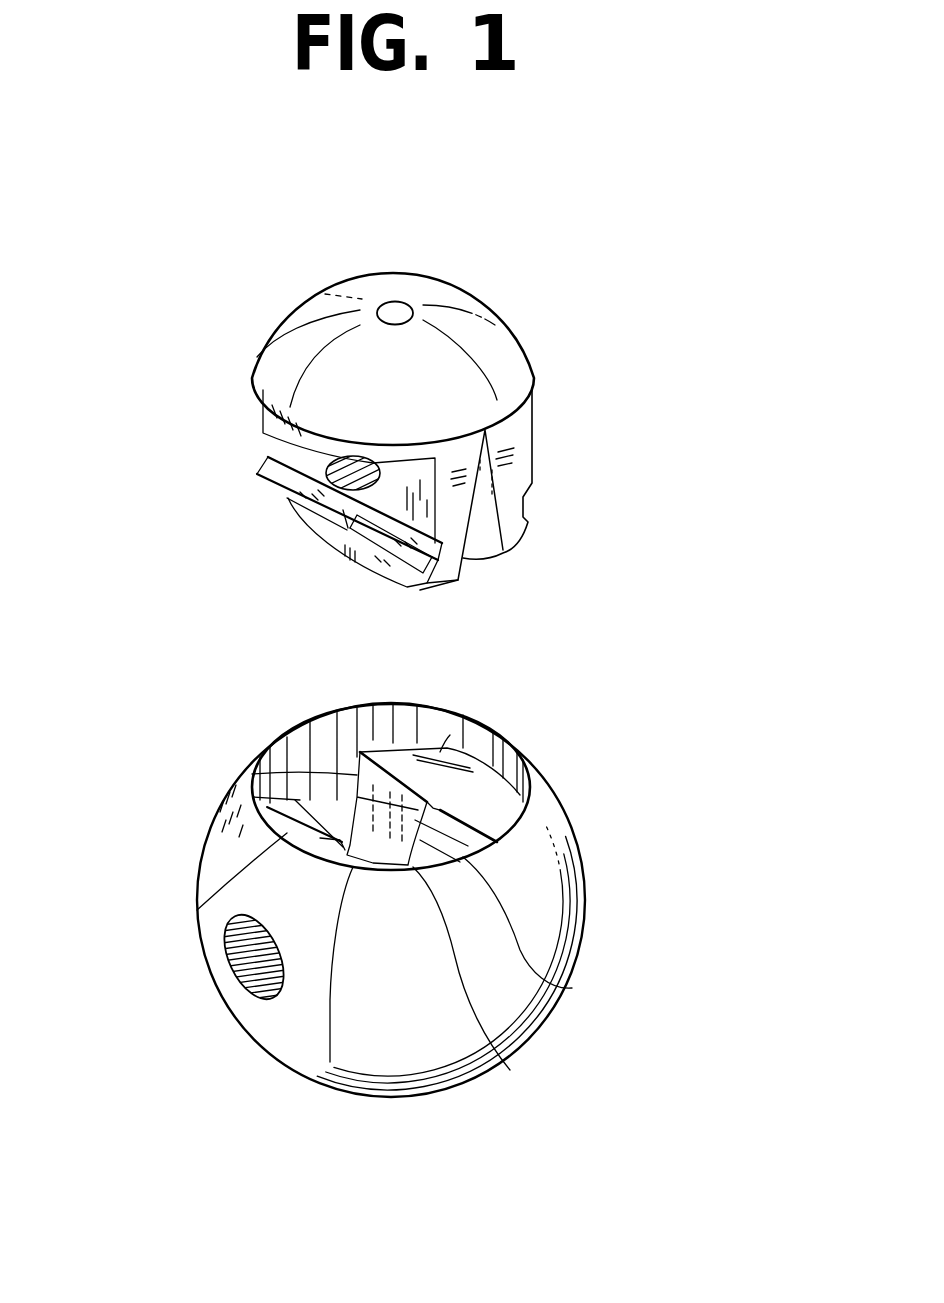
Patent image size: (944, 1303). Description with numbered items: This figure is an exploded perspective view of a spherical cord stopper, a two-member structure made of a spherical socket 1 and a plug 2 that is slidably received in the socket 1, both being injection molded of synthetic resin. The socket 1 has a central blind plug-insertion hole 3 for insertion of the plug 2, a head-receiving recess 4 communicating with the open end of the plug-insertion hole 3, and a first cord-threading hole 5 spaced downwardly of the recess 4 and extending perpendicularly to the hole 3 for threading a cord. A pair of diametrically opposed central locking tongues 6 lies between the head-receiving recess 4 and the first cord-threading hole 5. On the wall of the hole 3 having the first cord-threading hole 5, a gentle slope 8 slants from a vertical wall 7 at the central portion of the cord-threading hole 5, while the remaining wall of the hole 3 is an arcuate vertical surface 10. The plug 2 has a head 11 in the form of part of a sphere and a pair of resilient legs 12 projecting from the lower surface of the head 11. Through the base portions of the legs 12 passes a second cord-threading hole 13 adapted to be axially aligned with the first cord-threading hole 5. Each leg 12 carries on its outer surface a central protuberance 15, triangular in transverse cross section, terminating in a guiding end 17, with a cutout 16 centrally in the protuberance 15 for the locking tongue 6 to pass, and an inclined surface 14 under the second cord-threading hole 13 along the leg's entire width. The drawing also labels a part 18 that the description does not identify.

The spherical socket 1 is at (588, 870).
The plug 2 is at (515, 323).
The plug-insertion hole 3 is at (307, 723).
The head-receiving recess 4 is at (410, 750).
The first cord-threading hole 5 is at (232, 970).
The locking tongues 6 is at (440, 797).
The vertical wall 7 is at (307, 772).
The gentle slope 8 is at (510, 1070).
The arcuate vertical surface 10 is at (255, 797).
The head 11 is at (385, 290).
The resilient legs 12 is at (532, 437).
The second cord-threading hole 13 is at (355, 458).
The inclined surface 14 is at (268, 455).
The protuberance 15 is at (265, 483).
The cutout 16 is at (315, 537).
The guiding end 17 is at (370, 558).
The tab 18 is at (448, 502).